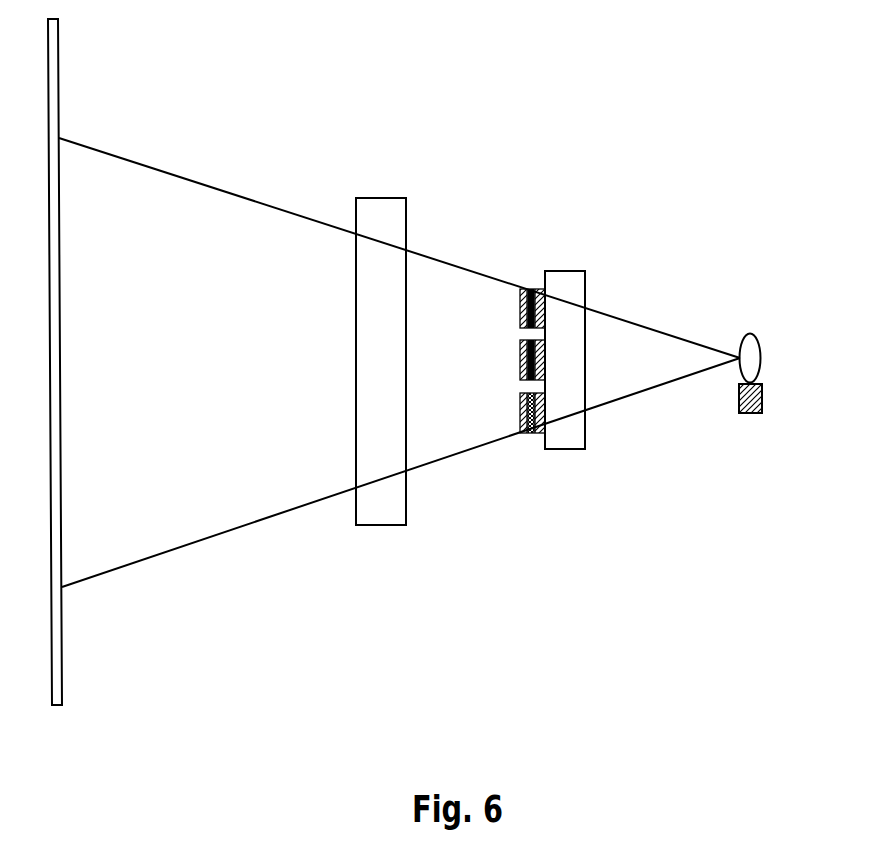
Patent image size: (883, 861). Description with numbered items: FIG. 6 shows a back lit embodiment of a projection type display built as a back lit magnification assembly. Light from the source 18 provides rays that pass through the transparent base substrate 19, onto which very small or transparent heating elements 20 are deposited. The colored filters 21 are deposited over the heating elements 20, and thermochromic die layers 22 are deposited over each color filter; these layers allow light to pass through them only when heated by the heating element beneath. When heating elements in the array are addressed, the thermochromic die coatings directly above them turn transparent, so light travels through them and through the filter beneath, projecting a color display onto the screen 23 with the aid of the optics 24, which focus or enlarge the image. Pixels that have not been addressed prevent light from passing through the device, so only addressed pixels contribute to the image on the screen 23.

The source 18 is at (796, 331).
The transparent base substrate 19 is at (613, 315).
The heating elements 20 is at (583, 337).
The colored filters 21 is at (494, 284).
The thermochromic die layers 22 is at (487, 379).
The screen 23 is at (103, 406).
The optics 24 is at (345, 317).